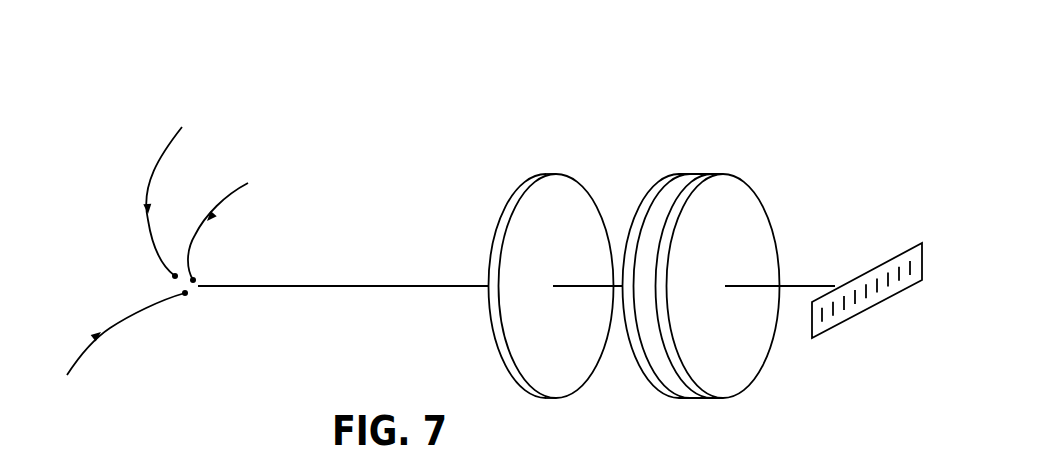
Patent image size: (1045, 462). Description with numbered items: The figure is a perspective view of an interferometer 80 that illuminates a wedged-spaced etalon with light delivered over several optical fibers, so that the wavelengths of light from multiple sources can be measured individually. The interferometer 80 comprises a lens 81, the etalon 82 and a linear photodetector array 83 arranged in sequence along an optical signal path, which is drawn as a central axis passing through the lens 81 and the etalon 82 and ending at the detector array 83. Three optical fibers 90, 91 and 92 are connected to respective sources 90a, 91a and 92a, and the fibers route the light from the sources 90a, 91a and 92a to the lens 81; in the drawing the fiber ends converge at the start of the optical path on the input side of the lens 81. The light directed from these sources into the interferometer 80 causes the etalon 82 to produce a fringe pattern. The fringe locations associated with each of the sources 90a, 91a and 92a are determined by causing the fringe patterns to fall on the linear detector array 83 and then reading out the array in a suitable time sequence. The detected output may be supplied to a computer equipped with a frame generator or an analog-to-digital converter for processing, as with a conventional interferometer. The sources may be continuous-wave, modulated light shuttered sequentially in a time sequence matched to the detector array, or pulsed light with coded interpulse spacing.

The interferometer 80 is at (540, 59).
The lens 81 is at (555, 173).
The wedged-spaced etalon 82 is at (726, 153).
The linear photodetector array 83 is at (890, 257).
The optical fiber 90 is at (198, 233).
The source 90a is at (248, 222).
The optical fiber 91 is at (130, 317).
The source 91a is at (112, 350).
The optical fiber 92 is at (153, 173).
The source 92a is at (186, 188).